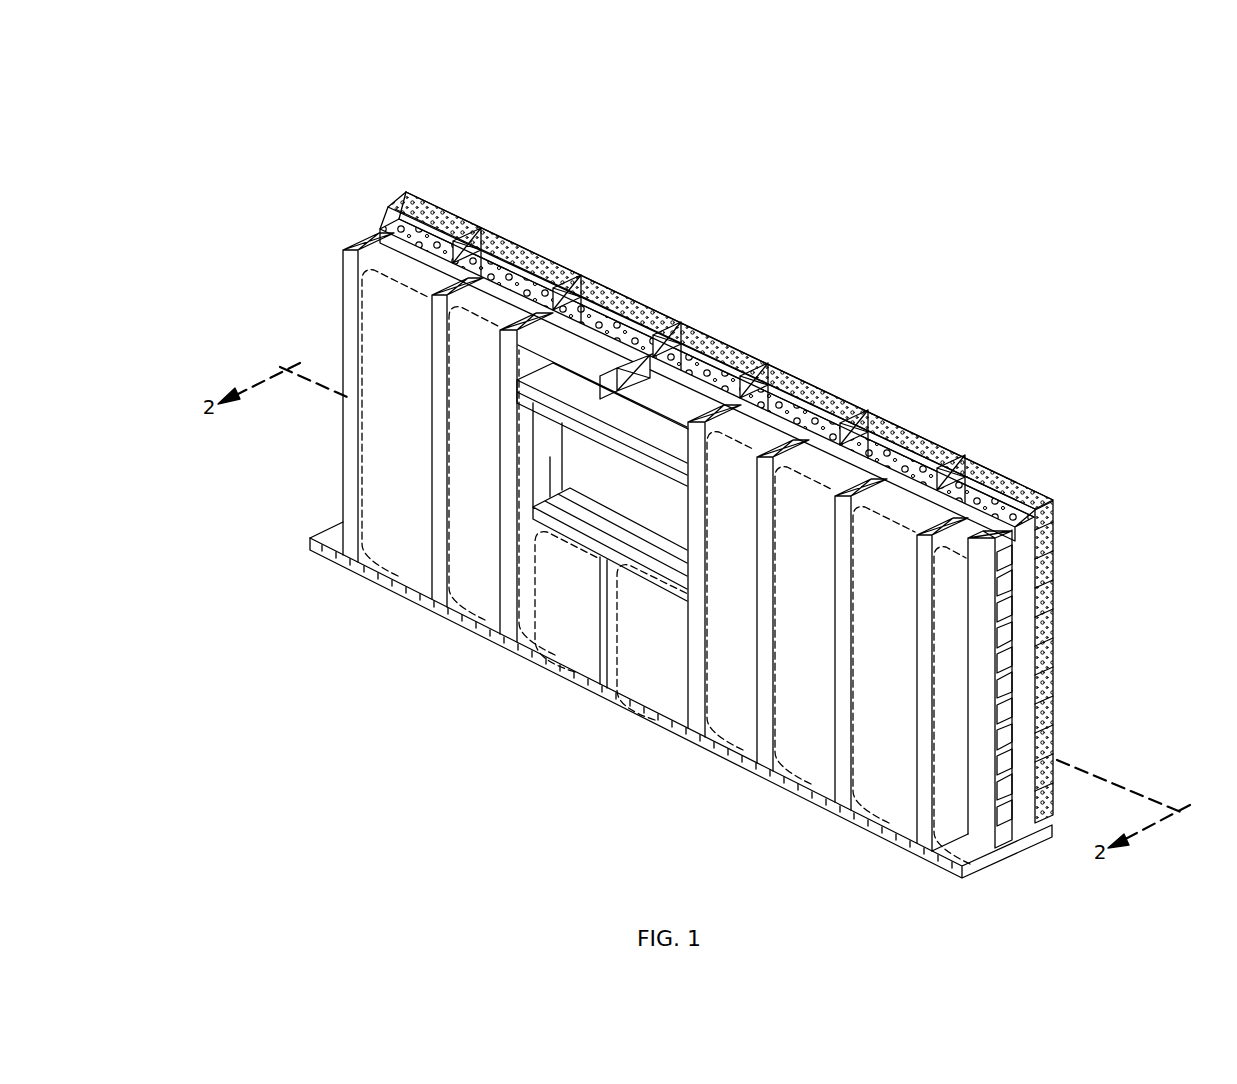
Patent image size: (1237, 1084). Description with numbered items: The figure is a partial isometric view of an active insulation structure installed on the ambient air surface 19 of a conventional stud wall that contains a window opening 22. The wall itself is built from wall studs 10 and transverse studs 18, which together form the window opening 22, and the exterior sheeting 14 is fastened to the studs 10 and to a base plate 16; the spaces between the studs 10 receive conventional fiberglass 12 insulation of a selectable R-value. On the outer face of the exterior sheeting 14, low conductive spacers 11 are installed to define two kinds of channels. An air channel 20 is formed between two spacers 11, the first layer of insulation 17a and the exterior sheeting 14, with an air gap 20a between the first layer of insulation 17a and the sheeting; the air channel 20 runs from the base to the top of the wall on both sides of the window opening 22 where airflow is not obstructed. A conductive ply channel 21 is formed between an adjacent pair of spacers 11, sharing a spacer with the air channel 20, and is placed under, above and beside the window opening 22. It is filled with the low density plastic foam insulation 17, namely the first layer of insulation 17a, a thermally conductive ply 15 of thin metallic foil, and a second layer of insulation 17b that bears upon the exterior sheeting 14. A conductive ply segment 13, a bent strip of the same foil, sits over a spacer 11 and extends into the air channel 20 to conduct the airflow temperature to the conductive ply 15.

The stud 10 is at (343, 335).
The spacer 11 is at (415, 215).
The fiberglass 12 is at (393, 291).
The conductive ply segment 13 is at (504, 250).
The exterior sheeting 14 is at (1008, 642).
The conductive ply 15 is at (432, 208).
The base plate 16 is at (553, 677).
The sheathing panel 17 is at (1055, 575).
The first layer low density plastic foam insulation 17a is at (540, 250).
The second layer low density plastic foam insulation 17b is at (733, 340).
The transverse stud 18 is at (583, 548).
The ambient air surface 19 is at (466, 222).
The air channel 20 is at (488, 267).
The air gap 20a is at (535, 278).
The conductive ply channel 21 is at (612, 330).
The window opening 22 is at (597, 457).